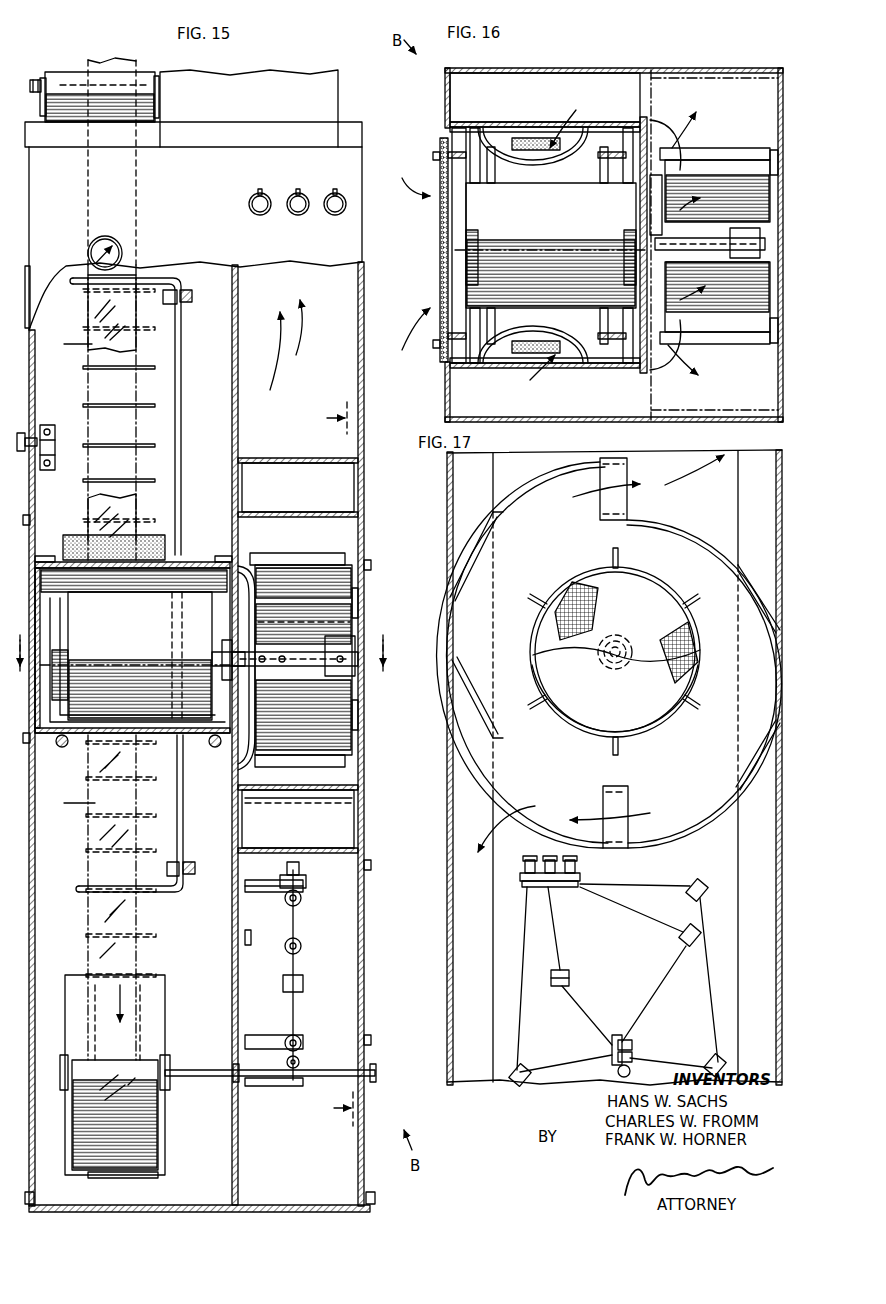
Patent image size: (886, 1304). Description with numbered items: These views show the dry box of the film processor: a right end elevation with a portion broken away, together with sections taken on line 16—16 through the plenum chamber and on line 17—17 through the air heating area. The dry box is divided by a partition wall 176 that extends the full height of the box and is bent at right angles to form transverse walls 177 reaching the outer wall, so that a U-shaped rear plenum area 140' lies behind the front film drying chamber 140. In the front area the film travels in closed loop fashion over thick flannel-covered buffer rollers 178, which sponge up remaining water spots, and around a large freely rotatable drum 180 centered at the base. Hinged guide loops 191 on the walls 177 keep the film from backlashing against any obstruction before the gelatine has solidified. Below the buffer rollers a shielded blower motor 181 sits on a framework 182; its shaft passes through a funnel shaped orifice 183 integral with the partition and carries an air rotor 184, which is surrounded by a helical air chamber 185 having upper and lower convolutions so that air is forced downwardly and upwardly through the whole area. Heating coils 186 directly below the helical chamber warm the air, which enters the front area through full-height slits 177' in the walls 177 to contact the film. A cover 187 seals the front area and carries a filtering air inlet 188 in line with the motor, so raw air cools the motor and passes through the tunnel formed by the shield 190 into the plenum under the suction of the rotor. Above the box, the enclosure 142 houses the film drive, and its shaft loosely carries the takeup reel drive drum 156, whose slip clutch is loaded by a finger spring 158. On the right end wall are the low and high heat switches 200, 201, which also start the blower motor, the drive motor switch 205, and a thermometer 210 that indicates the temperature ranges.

In FIG. 15, the film drying chamber 140 is at (196, 635).
In FIG. 16, the film drying chamber 140 is at (512, 245).
In FIG. 15, the rear area 140' is at (393, 734).
In FIG. 16, the rear area 140' is at (584, 232).
In FIG. 17, the rear area 140' is at (591, 767).
In FIG. 15, the enclosure 142 is at (292, 74).
In FIG. 15, the takeup reel drive drum 156 is at (66, 78).
In FIG. 15, the finger spring 158 is at (36, 93).
In FIG. 15, the section line 16— 16 is at (203, 664).
In FIG. 15, the section line 17— 17 is at (328, 764).
In FIG. 15, the partition wall 176 is at (240, 1136).
In FIG. 16, the partition wall 176 is at (658, 118).
In FIG. 17, the partition wall 176 is at (490, 897).
In FIG. 16, the transverse walls 177 is at (516, 250).
In FIG. 15, the slits 177' is at (139, 626).
In FIG. 16, the slits 177' is at (525, 227).
In FIG. 15, the buffer rollers 178 is at (158, 545).
In FIG. 15, the drum 180 is at (150, 1013).
In FIG. 16, the drum 180 is at (562, 172).
In FIG. 15, the blower motor 181 is at (127, 649).
In FIG. 16, the blower motor 181 is at (556, 236).
In FIG. 15, the framework 182 is at (228, 630).
In FIG. 16, the framework 182 is at (440, 170).
In FIG. 15, the funnel shaped orifice 183 is at (262, 592).
In FIG. 16, the funnel shaped orifice 183 is at (672, 172).
In FIG. 17, the funnel shaped orifice 183 is at (545, 642).
In FIG. 15, the air rotor 184 is at (325, 566).
In FIG. 16, the air rotor 184 is at (710, 252).
In FIG. 17, the air rotor 184 is at (612, 745).
In FIG. 15, the helical air chamber 185 is at (348, 476).
In FIG. 16, the helical air chamber 185 is at (654, 88).
In FIG. 17, the helical air chamber 185 is at (478, 540).
In FIG. 15, the heating coils 186 is at (296, 958).
In FIG. 17, the heating coils 186 is at (685, 975).
In FIG. 15, the cover 187 is at (38, 905).
In FIG. 16, the cover 187 is at (452, 124).
In FIG. 15, the filtering air inlet 188 is at (45, 614).
In FIG. 16, the filtering air inlet 188 is at (442, 228).
In FIG. 15, the shield 190 is at (52, 555).
In FIG. 16, the shield 190 is at (458, 152).
In FIG. 15, the guide loops 191 is at (142, 275).
In FIG. 16, the guide loops 191 is at (493, 148).
In FIG. 15, the low heat switch 200 is at (258, 192).
In FIG. 15, the high heat switch 201 is at (296, 192).
In FIG. 15, the drive motor switch 205 is at (334, 192).
In FIG. 15, the thermometer 210 is at (107, 238).